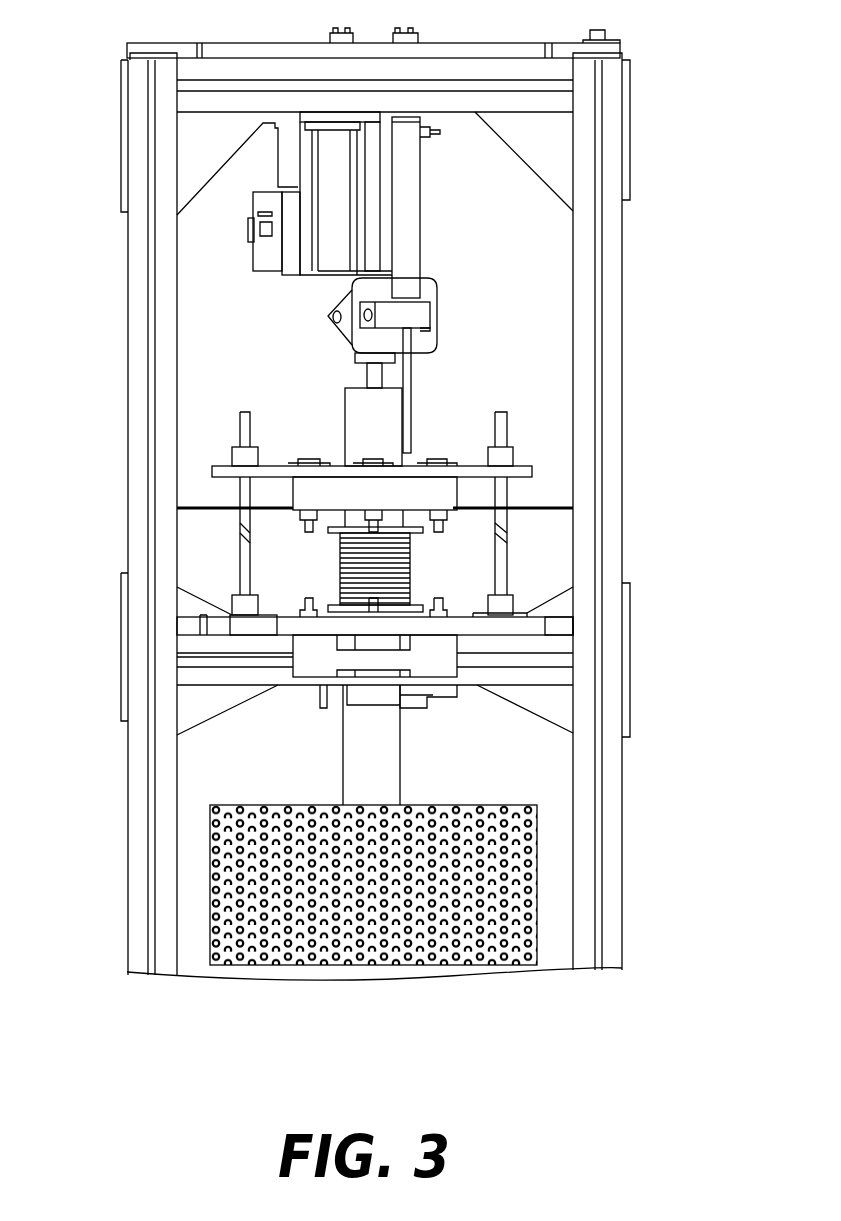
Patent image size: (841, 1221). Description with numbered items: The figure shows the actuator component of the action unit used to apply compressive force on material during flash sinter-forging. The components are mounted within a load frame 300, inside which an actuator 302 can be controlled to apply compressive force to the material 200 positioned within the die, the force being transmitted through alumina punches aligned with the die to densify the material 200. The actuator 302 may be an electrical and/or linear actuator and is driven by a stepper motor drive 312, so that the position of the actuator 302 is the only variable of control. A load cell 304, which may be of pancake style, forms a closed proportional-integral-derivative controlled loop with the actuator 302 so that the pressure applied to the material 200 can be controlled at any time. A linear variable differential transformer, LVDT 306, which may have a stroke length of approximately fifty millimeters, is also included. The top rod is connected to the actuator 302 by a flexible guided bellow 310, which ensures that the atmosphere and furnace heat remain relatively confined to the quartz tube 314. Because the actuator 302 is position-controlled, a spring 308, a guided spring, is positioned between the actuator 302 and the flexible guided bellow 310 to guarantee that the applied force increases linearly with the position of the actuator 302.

The material 200 is at (537, 858).
The load frame 300 is at (133, 852).
The actuator 302 is at (347, 374).
The load cell 304 is at (353, 70).
The linear variable differential transformer (LVDT) 306 is at (432, 243).
The spring 308 is at (397, 422).
The flexible guided bellow 310 is at (427, 563).
The stepper motor drive 312 is at (253, 257).
The quartz tube 314 is at (412, 775).